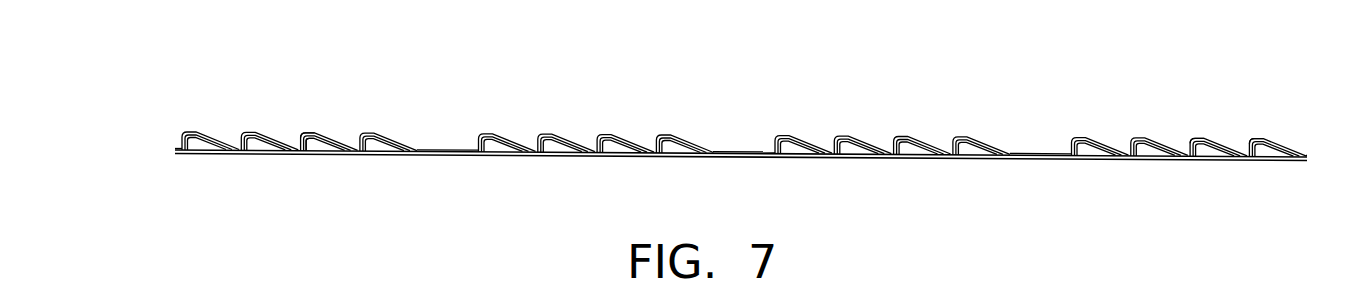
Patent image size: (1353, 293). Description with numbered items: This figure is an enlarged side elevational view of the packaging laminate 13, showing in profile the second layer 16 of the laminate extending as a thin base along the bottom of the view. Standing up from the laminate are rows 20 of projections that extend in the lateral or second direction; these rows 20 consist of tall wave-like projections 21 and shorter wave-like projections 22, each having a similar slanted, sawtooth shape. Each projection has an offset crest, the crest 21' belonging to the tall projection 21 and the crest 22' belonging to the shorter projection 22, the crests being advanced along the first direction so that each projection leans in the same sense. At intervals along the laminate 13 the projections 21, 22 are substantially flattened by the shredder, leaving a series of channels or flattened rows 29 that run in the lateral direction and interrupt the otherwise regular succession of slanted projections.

The packaging laminate 13 is at (1219, 68).
The second layer 16 is at (674, 174).
The rows 20 is at (184, 118).
The tall wave-like projections 21 is at (321, 111).
The shorter wave-like projections 22 is at (324, 165).
The offset crest 21' is at (1232, 116).
The offset crest 22' is at (1291, 118).
The flattened rows 29 is at (447, 129).